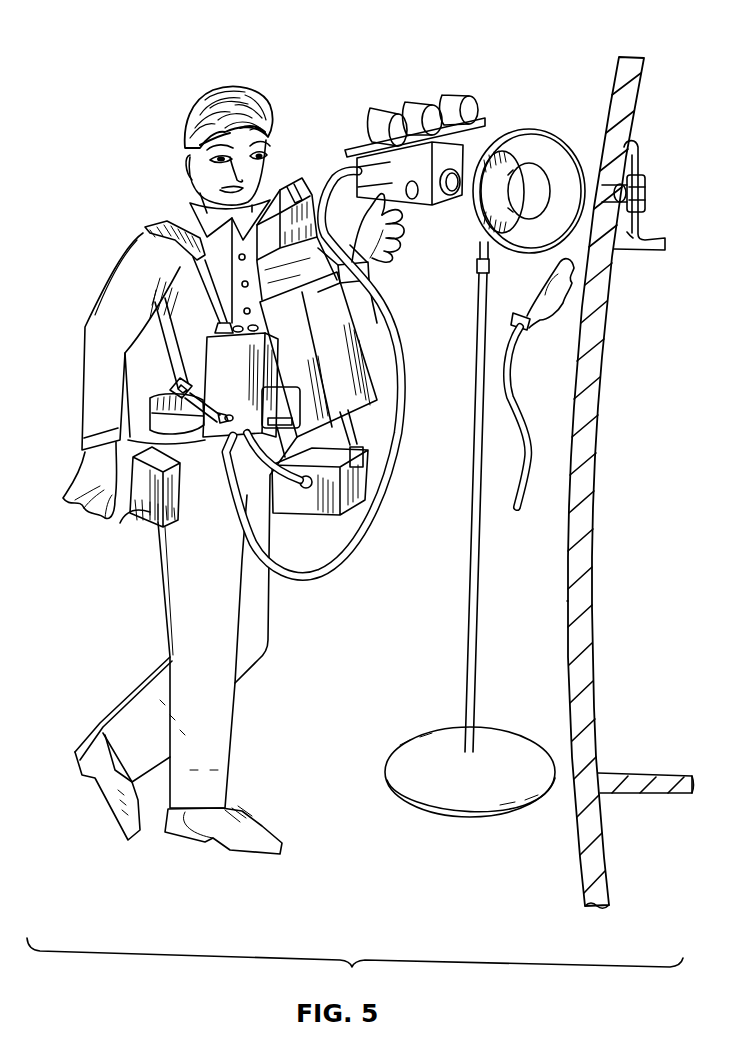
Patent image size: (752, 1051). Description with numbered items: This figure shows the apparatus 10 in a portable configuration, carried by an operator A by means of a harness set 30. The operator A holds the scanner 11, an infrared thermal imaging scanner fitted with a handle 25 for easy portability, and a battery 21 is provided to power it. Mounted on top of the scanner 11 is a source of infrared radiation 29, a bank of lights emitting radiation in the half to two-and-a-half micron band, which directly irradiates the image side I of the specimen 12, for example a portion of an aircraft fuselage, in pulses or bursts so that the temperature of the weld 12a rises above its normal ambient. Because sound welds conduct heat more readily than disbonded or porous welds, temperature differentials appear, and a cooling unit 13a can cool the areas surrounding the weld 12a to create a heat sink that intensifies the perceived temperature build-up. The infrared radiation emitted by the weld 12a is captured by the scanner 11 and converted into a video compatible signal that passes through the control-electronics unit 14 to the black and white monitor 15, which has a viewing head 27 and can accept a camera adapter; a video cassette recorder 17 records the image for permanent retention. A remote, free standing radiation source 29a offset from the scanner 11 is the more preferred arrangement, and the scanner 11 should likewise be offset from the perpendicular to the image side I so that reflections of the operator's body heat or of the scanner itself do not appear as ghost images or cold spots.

The apparatus 10 is at (339, 78).
The scanner 11 is at (440, 207).
The specimen 12 is at (612, 72).
The weld 12a is at (641, 173).
The cooling unit 13a is at (553, 336).
The control-electronics unit 14 is at (225, 362).
The black and white monitor 15 is at (340, 370).
The video cassette recorder 17 is at (355, 485).
The battery 21 is at (132, 512).
The handle 25 is at (385, 247).
The viewing head 27 is at (298, 176).
The source of infrared radiation 29 is at (462, 95).
The remote radiation source 29a is at (538, 130).
The harness set 30 is at (160, 426).
The operator A is at (192, 187).
The image side I is at (567, 601).